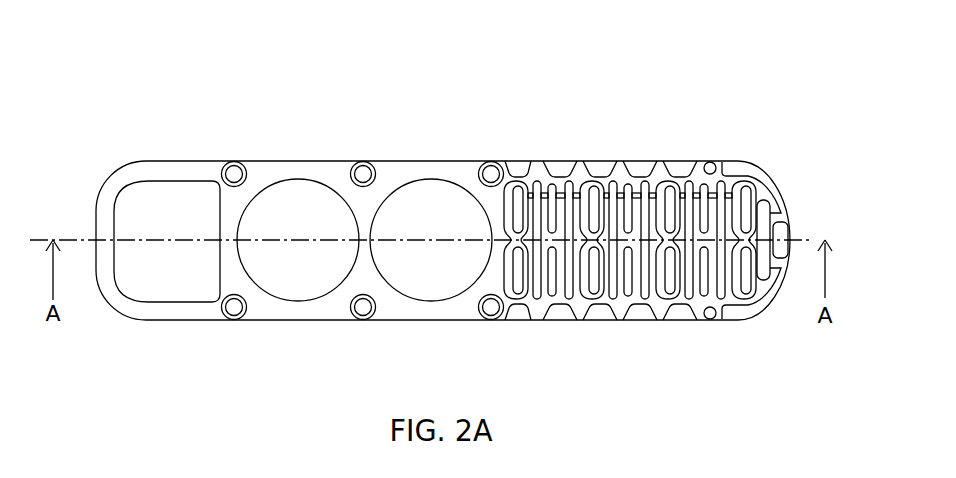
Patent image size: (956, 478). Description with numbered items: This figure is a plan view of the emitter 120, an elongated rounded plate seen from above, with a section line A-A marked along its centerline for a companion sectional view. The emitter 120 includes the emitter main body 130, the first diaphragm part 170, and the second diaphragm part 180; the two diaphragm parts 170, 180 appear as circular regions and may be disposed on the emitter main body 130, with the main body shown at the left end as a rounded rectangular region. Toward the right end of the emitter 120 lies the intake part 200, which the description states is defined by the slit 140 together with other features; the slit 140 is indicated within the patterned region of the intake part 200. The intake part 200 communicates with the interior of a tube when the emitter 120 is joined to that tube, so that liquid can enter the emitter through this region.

The emitter 120 is at (467, 161).
The emitter main body 130 is at (168, 161).
The second diaphragm part 180 is at (296, 179).
The first diaphragm part 170 is at (420, 180).
The slit 140 is at (531, 178).
The intake part 200 is at (646, 202).